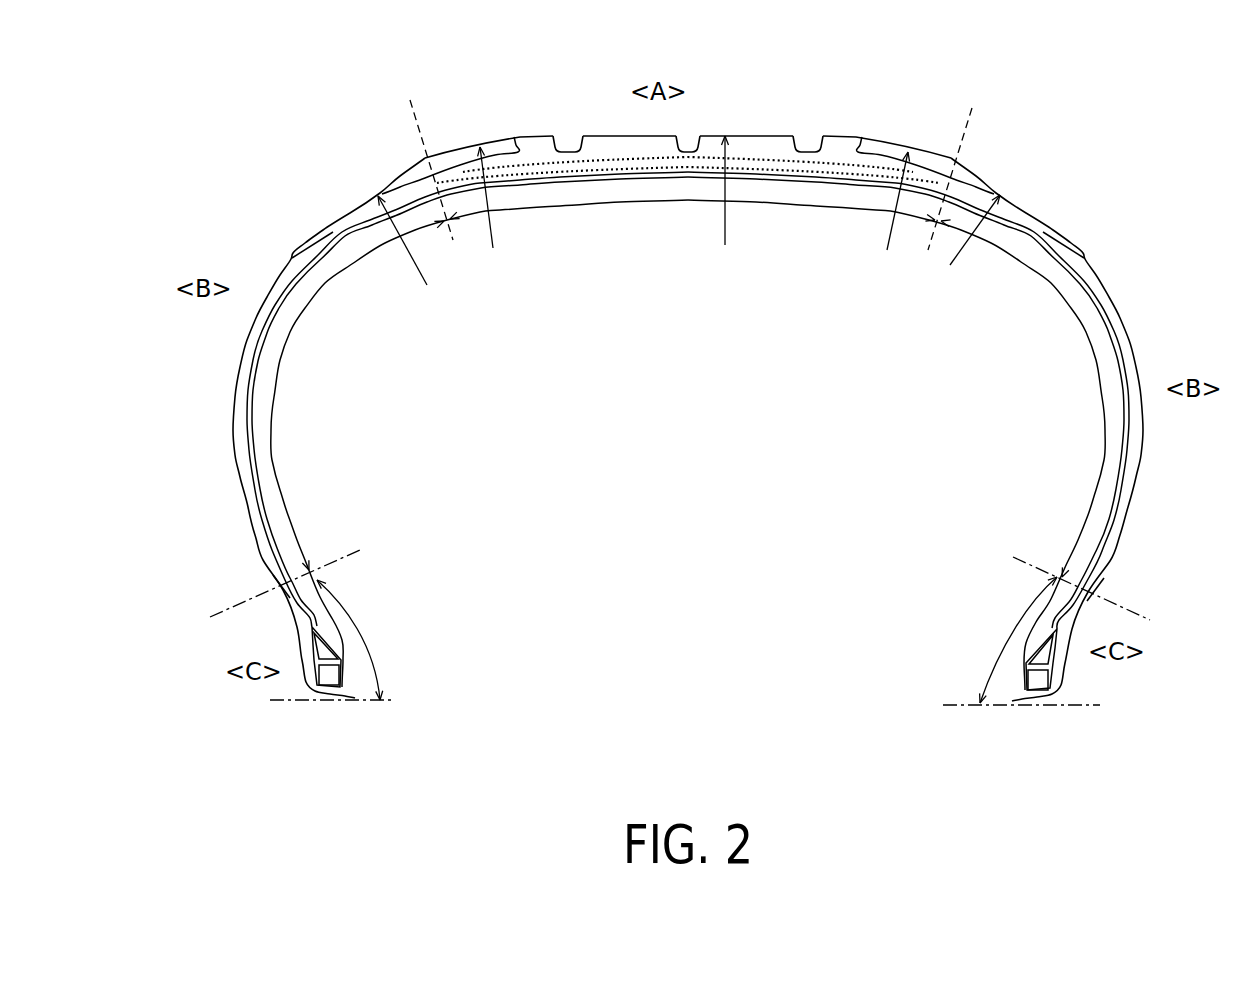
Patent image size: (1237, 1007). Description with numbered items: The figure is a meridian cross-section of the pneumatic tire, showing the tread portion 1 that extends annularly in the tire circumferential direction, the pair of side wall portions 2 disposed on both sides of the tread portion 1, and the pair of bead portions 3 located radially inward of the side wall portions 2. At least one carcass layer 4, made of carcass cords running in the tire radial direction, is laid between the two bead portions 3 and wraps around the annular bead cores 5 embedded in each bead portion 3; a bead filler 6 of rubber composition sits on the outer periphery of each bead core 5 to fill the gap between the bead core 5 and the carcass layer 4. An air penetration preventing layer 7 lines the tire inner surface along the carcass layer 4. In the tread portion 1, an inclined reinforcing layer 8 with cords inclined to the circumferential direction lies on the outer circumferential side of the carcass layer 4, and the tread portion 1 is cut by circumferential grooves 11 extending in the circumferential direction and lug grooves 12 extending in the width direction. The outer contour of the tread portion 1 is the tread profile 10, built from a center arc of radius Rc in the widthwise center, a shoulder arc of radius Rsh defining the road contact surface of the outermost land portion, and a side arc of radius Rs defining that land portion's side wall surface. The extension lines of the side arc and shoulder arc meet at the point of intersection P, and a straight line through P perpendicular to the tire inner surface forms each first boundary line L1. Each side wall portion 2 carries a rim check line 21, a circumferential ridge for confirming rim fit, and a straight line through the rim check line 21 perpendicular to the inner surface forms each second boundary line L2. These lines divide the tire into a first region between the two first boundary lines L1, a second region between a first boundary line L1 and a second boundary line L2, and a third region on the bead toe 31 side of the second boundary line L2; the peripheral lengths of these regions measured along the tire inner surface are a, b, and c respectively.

The tread portion 1 is at (752, 132).
The side wall portion 2 is at (233, 413).
The bead portion 3 is at (298, 680).
The carcass layer 4 is at (1100, 302).
The bead core 5 is at (332, 675).
The bead filler 6 is at (325, 645).
The air penetration preventing layer 7 is at (813, 180).
The inclined reinforcing layer 8 is at (855, 172).
The tread profile 10 is at (787, 135).
The circumferential groove 11 is at (560, 145).
The lug groove 12 is at (500, 145).
The rim check line 21 is at (280, 585).
The bead toe 31 is at (355, 702).
The first boundary line L1 is at (412, 110).
The second boundary line L2 is at (210, 615).
The point of intersection P is at (425, 157).
The radius of curvature of the side arc Rs is at (689, 253).
The radius of curvature of the shoulder arc Rsh is at (694, 215).
The radius of curvature of the center arc Rc is at (727, 204).
The peripheral length of the first region a is at (667, 212).
The peripheral length of the second region b is at (687, 393).
The peripheral length of the third region c is at (687, 639).